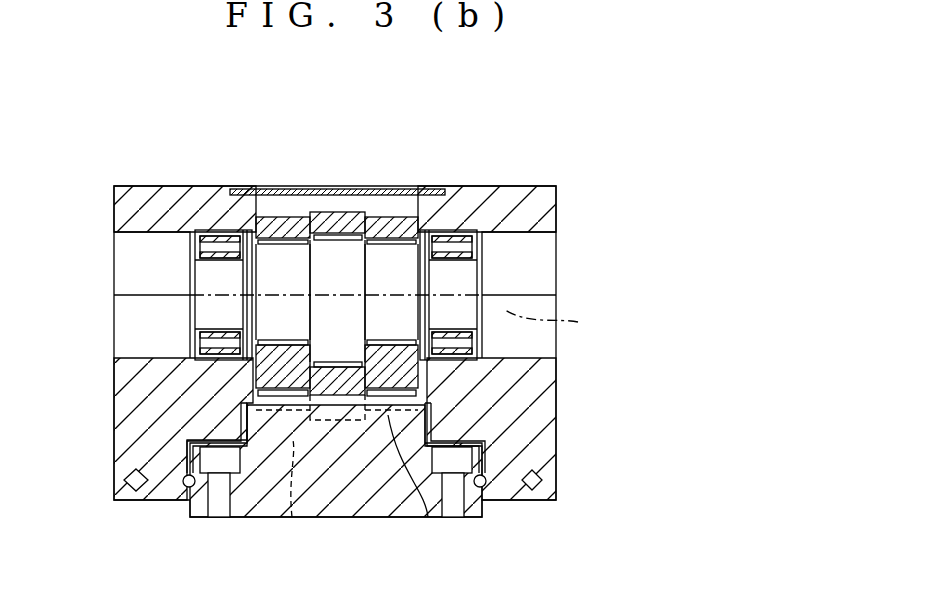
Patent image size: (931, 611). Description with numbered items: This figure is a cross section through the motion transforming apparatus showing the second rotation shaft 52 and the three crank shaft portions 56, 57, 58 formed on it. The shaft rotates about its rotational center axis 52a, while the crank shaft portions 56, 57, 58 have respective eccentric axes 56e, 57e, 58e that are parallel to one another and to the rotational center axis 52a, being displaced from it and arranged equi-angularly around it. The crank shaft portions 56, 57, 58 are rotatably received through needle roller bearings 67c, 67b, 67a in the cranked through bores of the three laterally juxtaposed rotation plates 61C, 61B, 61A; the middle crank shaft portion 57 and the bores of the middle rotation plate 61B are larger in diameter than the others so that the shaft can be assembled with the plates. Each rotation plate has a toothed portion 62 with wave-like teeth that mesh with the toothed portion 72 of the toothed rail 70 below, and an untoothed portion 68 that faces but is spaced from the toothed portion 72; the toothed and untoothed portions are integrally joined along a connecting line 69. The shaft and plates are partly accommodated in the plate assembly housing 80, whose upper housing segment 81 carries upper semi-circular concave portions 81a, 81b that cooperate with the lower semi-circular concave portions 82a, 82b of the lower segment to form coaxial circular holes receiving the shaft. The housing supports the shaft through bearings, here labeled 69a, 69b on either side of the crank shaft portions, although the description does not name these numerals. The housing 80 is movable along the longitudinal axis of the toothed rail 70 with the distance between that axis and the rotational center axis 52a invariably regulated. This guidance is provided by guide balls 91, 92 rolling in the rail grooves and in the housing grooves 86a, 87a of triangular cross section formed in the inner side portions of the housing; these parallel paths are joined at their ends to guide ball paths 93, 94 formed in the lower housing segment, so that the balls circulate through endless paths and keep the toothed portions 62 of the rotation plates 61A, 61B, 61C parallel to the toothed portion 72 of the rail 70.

The plate assembly housing 80 is at (521, 185).
The upper housing segment 81 is at (150, 186).
The upper semi-circular concave portion 81a is at (117, 250).
The upper semi-circular concave portion 81b is at (517, 242).
The lower semi-circular concave portion 82a is at (150, 350).
The lower semi-circular concave portion 82b is at (540, 357).
The second rotation shaft 52 is at (205, 312).
The rotational center axis 52a is at (564, 318).
The crank shaft portion 56 is at (293, 327).
The eccentric axis 56e is at (275, 280).
The crank shaft portion 57 is at (353, 339).
The eccentric axis 57e is at (338, 296).
The crank shaft portion 58 is at (405, 329).
The eccentric axis 58e is at (473, 280).
The rotation plate 61A is at (394, 217).
The rotation plate 61B is at (328, 212).
The rotation plate 61C is at (283, 217).
The needle roller bearing 67a is at (390, 245).
The needle roller bearing 67b is at (352, 212).
The needle roller bearing 67c is at (278, 297).
The untoothed portion 68 is at (228, 387).
The connecting line 69 is at (270, 437).
The left bearing 69a is at (215, 232).
The right bearing 69b is at (455, 250).
The toothed rail 70 is at (346, 517).
The toothed portion 72 is at (428, 517).
The toothed portion 62 is at (292, 517).
The housing groove 86a is at (500, 448).
The housing groove 87a is at (180, 478).
The guide balls 91 is at (202, 500).
The guide balls 92 is at (476, 492).
The guide ball path 93 is at (118, 473).
The guide ball path 94 is at (542, 478).